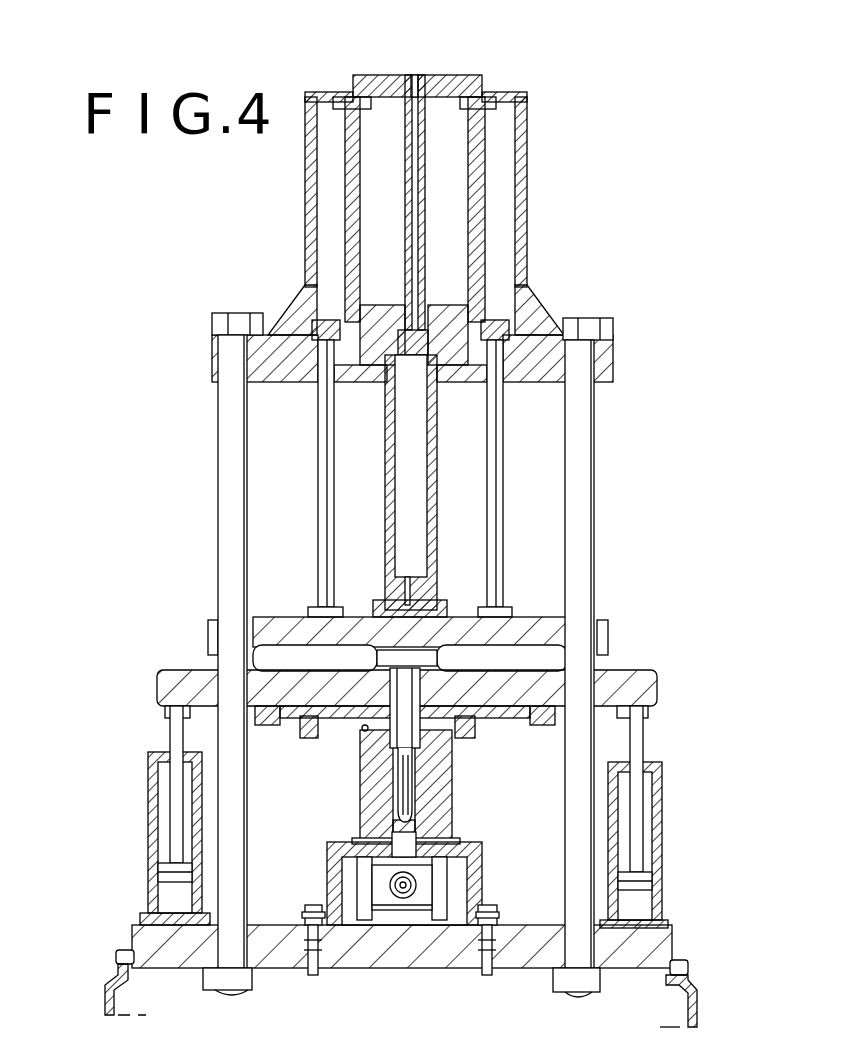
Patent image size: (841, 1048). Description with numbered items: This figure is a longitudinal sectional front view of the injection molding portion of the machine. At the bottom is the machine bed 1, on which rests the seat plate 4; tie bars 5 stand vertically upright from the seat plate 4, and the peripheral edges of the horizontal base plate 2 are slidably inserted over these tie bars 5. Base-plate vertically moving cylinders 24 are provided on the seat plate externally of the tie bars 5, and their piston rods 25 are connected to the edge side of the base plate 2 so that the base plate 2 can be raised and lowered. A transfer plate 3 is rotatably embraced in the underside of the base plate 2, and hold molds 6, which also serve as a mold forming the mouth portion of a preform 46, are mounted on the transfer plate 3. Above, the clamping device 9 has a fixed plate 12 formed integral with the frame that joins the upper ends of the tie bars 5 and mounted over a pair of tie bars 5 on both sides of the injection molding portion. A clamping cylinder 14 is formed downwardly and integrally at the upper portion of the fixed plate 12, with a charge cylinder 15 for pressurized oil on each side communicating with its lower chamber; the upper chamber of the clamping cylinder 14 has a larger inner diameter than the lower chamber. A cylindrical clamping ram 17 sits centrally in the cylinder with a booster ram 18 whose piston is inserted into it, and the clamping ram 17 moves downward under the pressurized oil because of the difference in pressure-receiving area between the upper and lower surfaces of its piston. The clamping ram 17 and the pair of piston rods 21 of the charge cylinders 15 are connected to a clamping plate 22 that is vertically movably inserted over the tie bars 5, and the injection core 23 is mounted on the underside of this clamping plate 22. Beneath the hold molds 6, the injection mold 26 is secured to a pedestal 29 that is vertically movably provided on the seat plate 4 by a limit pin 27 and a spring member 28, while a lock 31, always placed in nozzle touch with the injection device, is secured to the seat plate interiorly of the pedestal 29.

The machine bed 1 is at (113, 985).
The horizontal base plate 2 is at (640, 690).
The transfer plate 3 is at (298, 722).
The seat plate 4 is at (185, 950).
The tie bars 5 is at (218, 495).
The hold molds 6 is at (348, 740).
The clamping device 9 is at (268, 289).
The fixed plate 12 is at (292, 357).
The clamping cylinder 14 is at (455, 75).
The charge cylinder 15 is at (305, 228).
The clamping ram 17 is at (385, 533).
The booster ram 18 is at (426, 185).
The piston rods 21 is at (320, 455).
The clamping plate 22 is at (210, 630).
The injection core 23 is at (415, 780).
The base-plate vertically moving cylinder 24 is at (148, 830).
The piston rods 25 is at (172, 723).
The injection mold 26 is at (445, 810).
The limit pin 27 is at (312, 905).
The spring member 28 is at (304, 942).
The pedestal 29 is at (482, 860).
The lock 31 is at (388, 920).
The preform 46 is at (385, 800).